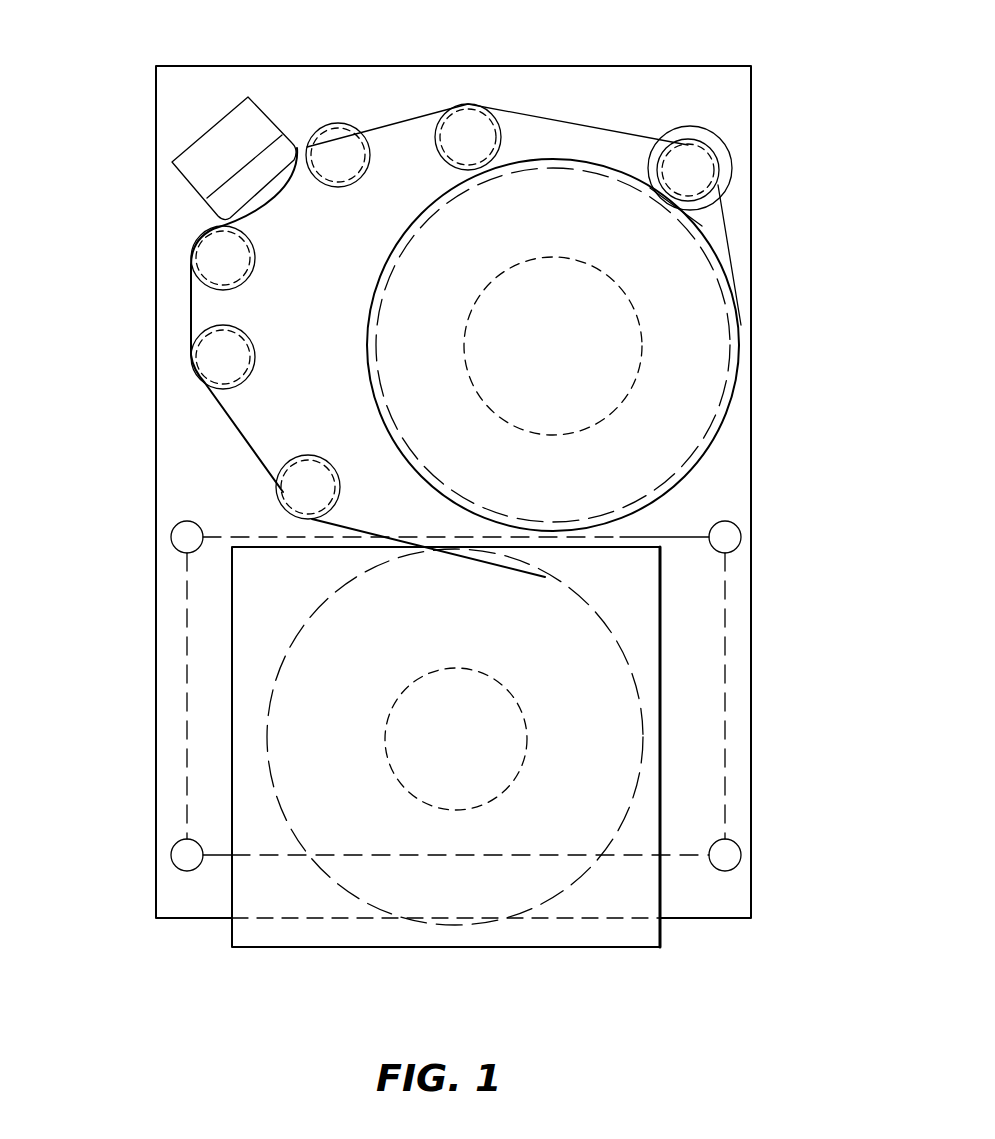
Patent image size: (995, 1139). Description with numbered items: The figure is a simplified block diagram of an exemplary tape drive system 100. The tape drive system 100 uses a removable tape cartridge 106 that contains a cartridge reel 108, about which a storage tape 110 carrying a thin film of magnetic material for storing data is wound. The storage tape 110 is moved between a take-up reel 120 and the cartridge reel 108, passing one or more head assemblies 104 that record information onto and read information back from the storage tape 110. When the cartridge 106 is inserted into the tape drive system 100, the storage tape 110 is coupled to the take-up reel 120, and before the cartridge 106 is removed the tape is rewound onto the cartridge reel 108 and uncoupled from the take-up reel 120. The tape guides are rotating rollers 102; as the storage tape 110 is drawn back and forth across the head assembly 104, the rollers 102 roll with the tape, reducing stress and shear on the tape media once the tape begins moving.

The tape drive system 100 is at (203, 1016).
The rotating rollers 102 is at (345, 148).
The head assembly 104 is at (213, 153).
The tape cartridge 106 is at (665, 762).
The cartridge reel 108 is at (278, 680).
The storage tape 110 is at (242, 430).
The take-up reel 120 is at (698, 323).